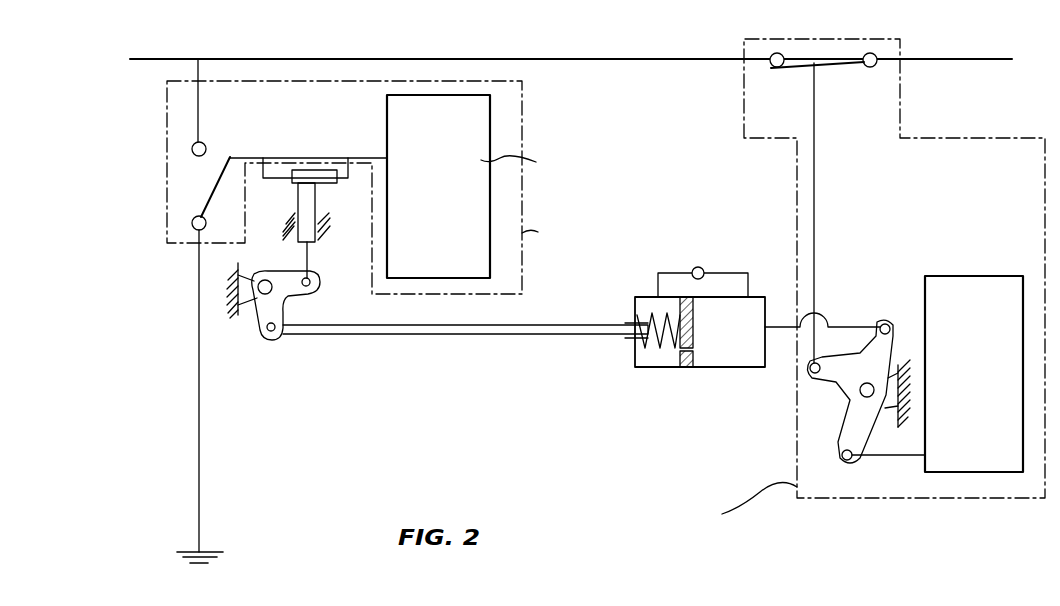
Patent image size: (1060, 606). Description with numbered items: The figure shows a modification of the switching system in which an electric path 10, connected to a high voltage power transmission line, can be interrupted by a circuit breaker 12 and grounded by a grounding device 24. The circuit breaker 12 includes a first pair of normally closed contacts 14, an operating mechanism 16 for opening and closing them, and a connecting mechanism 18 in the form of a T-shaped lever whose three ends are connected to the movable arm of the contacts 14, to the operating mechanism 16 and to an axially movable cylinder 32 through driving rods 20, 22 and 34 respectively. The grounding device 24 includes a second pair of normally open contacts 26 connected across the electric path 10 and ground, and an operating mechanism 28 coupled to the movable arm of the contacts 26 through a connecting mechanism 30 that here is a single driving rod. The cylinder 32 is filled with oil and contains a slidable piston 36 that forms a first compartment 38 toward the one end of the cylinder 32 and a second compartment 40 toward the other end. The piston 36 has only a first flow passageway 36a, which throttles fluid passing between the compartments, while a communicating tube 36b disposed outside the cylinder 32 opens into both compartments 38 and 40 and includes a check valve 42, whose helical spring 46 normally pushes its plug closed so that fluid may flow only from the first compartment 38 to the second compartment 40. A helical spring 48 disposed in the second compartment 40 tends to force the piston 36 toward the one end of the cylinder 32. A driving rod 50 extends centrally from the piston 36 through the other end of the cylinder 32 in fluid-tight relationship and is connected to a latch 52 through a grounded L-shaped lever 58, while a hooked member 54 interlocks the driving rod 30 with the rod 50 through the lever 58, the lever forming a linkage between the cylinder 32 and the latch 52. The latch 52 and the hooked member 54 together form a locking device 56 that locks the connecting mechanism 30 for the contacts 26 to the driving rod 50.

The electric path 10 is at (603, 57).
The circuit breaker 12 is at (936, 138).
The first pair of normally closed contacts 14 is at (836, 70).
The operating mechanism 16 is at (964, 276).
The connecting mechanism 18 is at (864, 352).
The driving rod 20 is at (817, 242).
The driving rod 22 is at (886, 455).
The grounding device 24 is at (572, 124).
The second pair of normally open contacts 26 is at (232, 150).
The operating mechanism 28 is at (387, 124).
The connecting mechanism 30 is at (316, 158).
The axially movable cylinder 32 is at (711, 368).
The driving rod 34 is at (783, 332).
The piston 36 is at (694, 322).
The first flow passageway 36a is at (679, 362).
The communicating tube 36b is at (738, 273).
The first compartment 38 is at (745, 354).
The second compartment 40 is at (656, 352).
The check valve 42 is at (702, 267).
The helical spring 46 is at (645, 302).
The helical spring 48 is at (642, 352).
The driving rod 50 is at (397, 338).
The latch 52 is at (310, 206).
The hooked member 54 is at (325, 171).
The locking device 56 is at (281, 207).
The L-shaped lever 58 is at (286, 292).